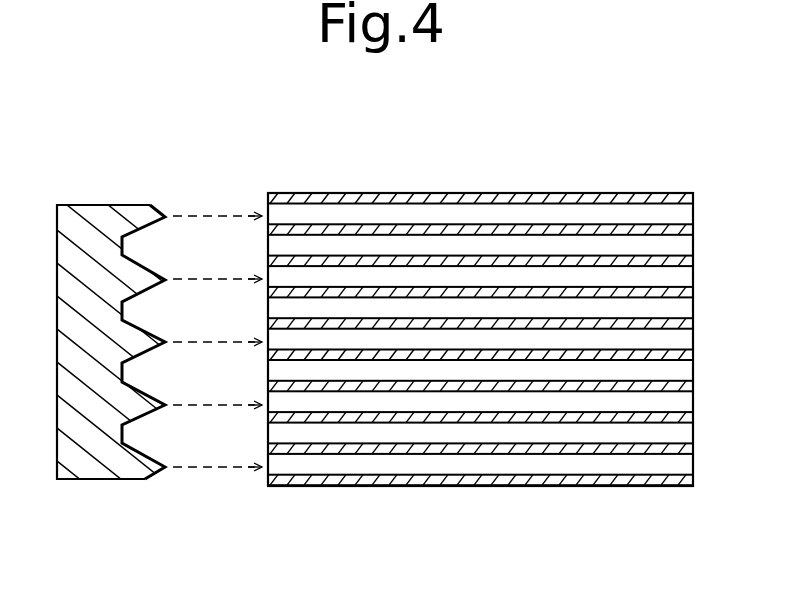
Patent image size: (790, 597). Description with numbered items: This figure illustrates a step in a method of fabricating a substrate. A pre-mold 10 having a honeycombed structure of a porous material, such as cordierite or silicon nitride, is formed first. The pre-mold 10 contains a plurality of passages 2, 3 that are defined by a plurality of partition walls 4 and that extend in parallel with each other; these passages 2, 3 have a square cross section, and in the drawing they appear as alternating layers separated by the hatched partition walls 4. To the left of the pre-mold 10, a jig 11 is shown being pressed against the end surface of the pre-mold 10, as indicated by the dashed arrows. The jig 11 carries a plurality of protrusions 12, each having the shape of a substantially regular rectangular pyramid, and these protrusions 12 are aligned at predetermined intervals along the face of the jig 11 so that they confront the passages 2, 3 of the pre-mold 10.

The pre-mold 10 is at (534, 158).
The passage 2 is at (342, 277).
The passage 3 is at (440, 307).
The partition wall 4 is at (590, 257).
The jig 11 is at (78, 218).
The protrusion 12 is at (135, 210).